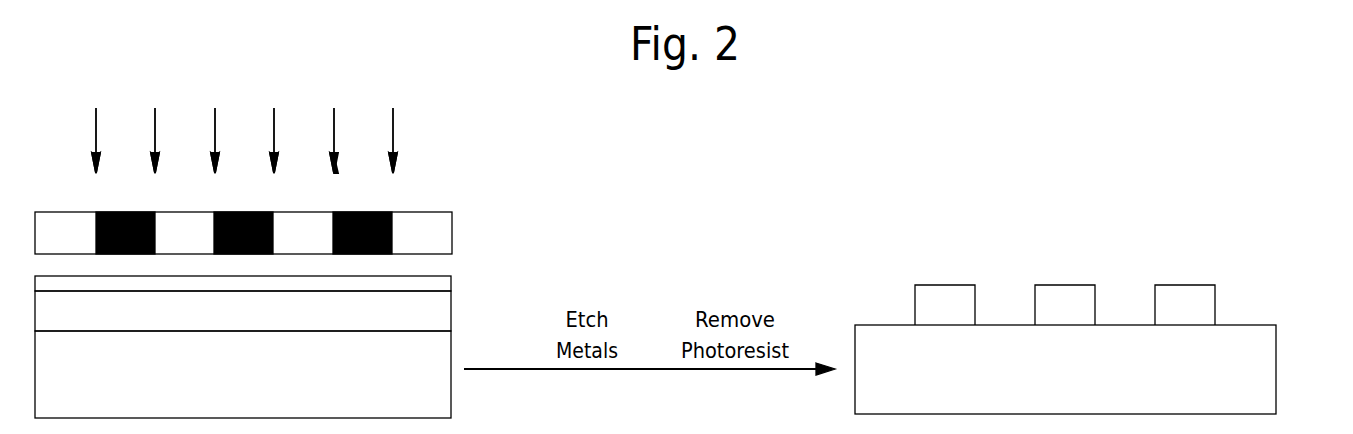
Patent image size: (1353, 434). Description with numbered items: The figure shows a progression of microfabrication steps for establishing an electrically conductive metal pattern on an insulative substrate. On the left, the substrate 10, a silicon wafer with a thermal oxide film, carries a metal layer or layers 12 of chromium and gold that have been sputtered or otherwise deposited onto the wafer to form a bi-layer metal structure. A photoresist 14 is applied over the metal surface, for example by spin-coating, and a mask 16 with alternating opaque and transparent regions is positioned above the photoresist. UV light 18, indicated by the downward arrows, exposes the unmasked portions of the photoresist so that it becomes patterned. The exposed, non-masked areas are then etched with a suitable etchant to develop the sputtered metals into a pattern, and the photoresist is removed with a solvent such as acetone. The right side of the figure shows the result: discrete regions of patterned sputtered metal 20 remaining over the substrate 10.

The substrate 10 is at (442, 404).
The metal layer 12 is at (442, 315).
The photoresist 14 is at (442, 282).
The mask 16 is at (443, 229).
The UV light 18 is at (393, 125).
The patterned sputtered metal 20 is at (1215, 300).